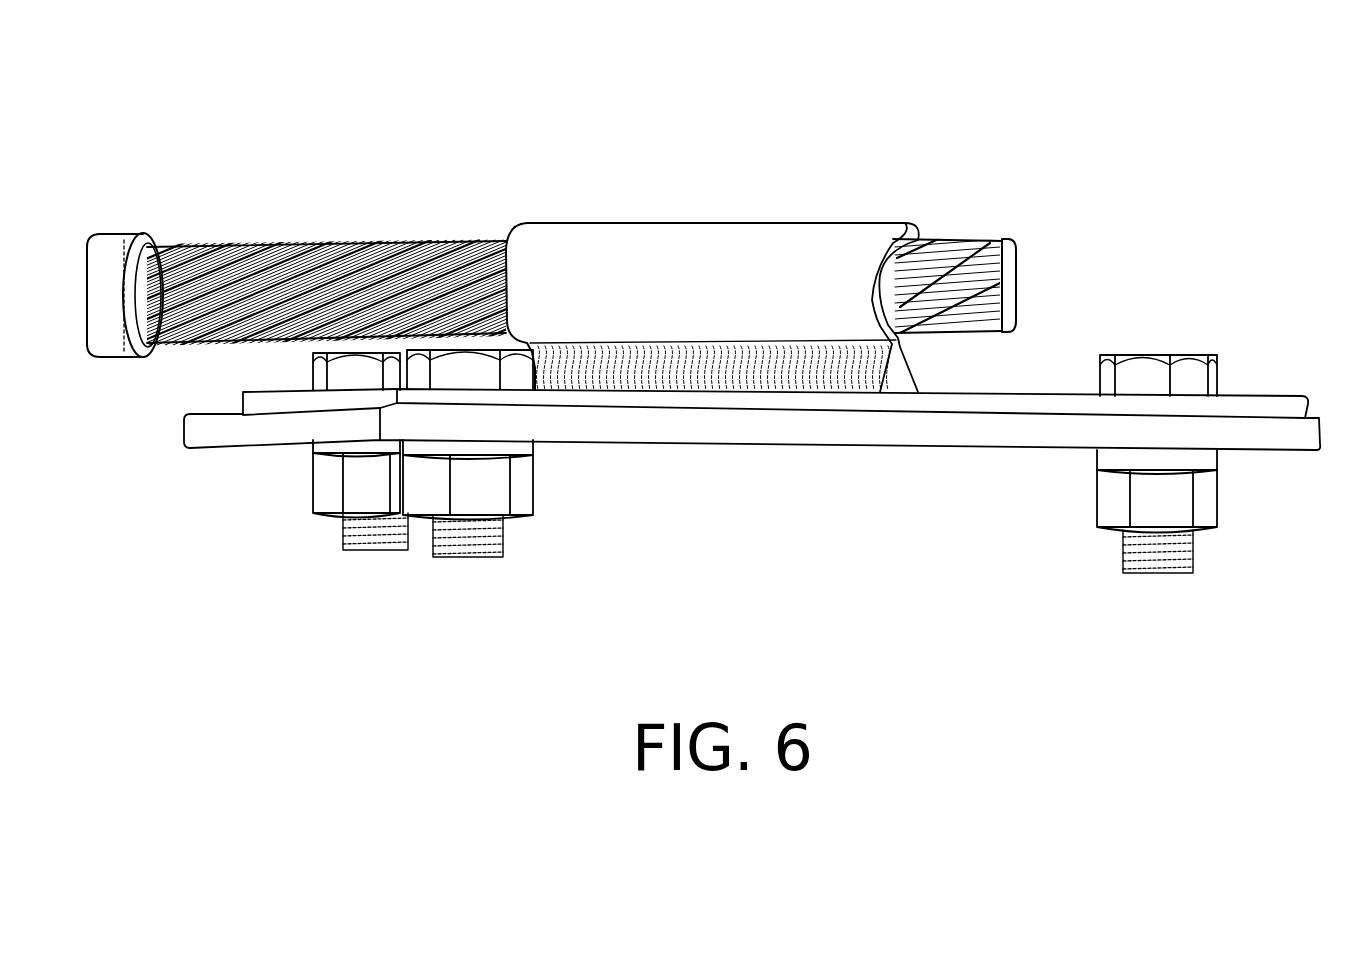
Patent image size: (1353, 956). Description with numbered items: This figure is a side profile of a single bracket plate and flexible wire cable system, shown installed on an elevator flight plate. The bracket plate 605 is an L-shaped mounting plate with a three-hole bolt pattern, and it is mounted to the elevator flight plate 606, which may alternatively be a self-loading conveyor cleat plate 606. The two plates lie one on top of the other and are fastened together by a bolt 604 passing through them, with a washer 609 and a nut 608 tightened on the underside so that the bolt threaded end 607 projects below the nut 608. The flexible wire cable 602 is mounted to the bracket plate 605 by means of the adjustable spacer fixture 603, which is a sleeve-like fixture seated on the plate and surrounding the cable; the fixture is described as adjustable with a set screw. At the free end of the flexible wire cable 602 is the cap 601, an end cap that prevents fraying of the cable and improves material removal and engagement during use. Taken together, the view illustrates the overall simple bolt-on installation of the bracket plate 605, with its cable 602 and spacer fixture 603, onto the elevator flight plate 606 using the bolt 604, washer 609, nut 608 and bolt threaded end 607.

The cap 601 is at (176, 232).
The flexible wire cable 602 is at (305, 254).
The adjustable spacer fixture 603 is at (838, 230).
The bolt 604 is at (1154, 342).
The bracket plate 605 is at (1250, 388).
The elevator flight plate 606 is at (1292, 444).
The bolt threaded end 607 is at (1180, 573).
The nut 608 is at (1100, 503).
The washer 609 is at (1087, 461).